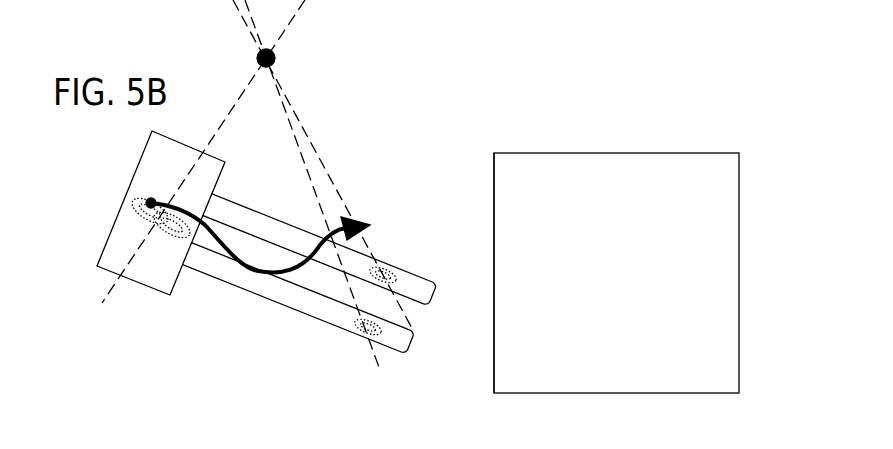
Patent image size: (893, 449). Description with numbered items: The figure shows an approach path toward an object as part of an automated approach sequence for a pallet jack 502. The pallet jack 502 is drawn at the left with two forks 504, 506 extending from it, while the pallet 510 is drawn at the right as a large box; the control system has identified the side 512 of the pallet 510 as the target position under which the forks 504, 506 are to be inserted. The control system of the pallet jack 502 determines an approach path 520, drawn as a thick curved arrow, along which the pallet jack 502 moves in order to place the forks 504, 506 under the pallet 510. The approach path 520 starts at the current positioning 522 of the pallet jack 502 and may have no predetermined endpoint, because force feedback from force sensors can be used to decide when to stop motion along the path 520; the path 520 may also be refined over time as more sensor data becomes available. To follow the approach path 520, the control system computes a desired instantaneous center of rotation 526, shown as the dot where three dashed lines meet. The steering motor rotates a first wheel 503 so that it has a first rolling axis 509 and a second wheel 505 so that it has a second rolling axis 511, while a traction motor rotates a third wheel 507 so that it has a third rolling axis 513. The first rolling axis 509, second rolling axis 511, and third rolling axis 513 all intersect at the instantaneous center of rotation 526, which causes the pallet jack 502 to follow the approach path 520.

The pallet jack 502 is at (127, 255).
The first wheel 503 is at (393, 267).
The fork 504 is at (415, 282).
The second wheel 505 is at (368, 331).
The fork 506 is at (307, 303).
The third wheel 507 is at (160, 233).
The first rolling axis 509 is at (332, 175).
The pallet 510 is at (675, 262).
The second rolling axis 511 is at (313, 178).
The side of the pallet 512 is at (500, 187).
The third rolling axis 513 is at (252, 84).
The approach path 520 is at (209, 232).
The current positioning 522 is at (146, 199).
The instantaneous center of rotation 526 is at (278, 53).